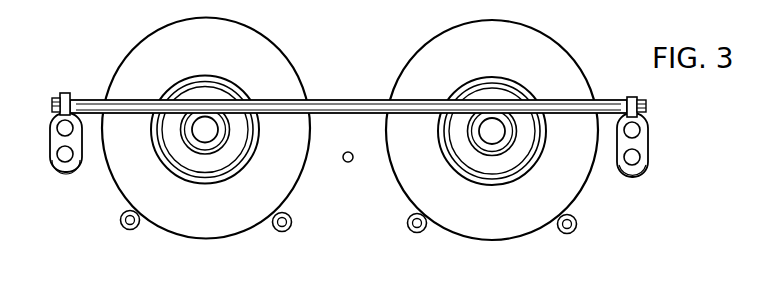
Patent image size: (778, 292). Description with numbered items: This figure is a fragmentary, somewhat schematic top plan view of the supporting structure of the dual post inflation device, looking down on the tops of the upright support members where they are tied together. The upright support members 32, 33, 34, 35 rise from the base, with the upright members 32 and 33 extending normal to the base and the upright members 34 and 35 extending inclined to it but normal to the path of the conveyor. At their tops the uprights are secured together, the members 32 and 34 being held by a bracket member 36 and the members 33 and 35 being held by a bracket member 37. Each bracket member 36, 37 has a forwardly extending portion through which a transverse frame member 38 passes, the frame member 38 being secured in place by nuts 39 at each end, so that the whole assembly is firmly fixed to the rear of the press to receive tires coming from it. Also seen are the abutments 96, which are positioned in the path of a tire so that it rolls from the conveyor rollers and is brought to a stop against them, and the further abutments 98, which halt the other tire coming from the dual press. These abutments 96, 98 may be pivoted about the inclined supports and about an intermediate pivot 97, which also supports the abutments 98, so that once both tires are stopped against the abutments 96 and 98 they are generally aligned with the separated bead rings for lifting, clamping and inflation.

The upright support member 32 is at (62, 164).
The upright support member 33 is at (639, 158).
The upright support member 34 is at (62, 128).
The upright support member 35 is at (637, 128).
The bracket member 36 is at (72, 174).
The bracket member 37 is at (628, 178).
The transverse frame member 38 is at (346, 100).
The nuts 39 is at (53, 99).
The abutments 96 is at (130, 230).
The intermediate pivot 97 is at (348, 163).
The abutments 98 is at (417, 234).